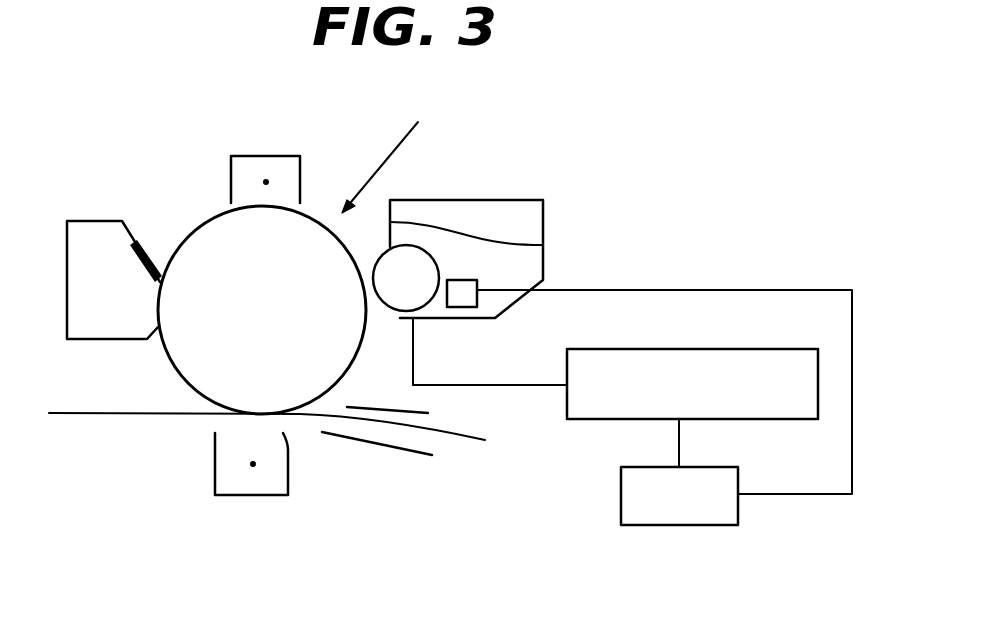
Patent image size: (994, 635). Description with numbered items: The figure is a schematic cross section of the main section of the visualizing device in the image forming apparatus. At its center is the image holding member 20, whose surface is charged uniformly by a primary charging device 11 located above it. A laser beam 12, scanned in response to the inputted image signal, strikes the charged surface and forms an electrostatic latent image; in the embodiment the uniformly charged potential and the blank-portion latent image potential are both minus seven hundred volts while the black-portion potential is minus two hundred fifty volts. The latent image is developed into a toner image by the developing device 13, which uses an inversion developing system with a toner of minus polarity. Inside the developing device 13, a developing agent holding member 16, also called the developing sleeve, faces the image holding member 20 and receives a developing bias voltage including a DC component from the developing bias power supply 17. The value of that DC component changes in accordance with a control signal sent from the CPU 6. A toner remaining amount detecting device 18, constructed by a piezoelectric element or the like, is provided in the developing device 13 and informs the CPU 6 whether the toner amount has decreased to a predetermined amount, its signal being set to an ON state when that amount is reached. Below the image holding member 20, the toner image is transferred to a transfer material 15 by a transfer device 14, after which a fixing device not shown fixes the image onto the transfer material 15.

The CPU 6 is at (705, 525).
The primary charging device 11 is at (270, 155).
The laser beam 12 is at (386, 159).
The developing device 13 is at (500, 200).
The transfer device 14 is at (241, 495).
The transfer material 15 is at (127, 415).
The developing agent holding member 16 is at (393, 312).
The developing bias power supply 17 is at (752, 349).
The toner remaining amount detecting device 18 is at (465, 280).
The image holding member 20 is at (200, 228).